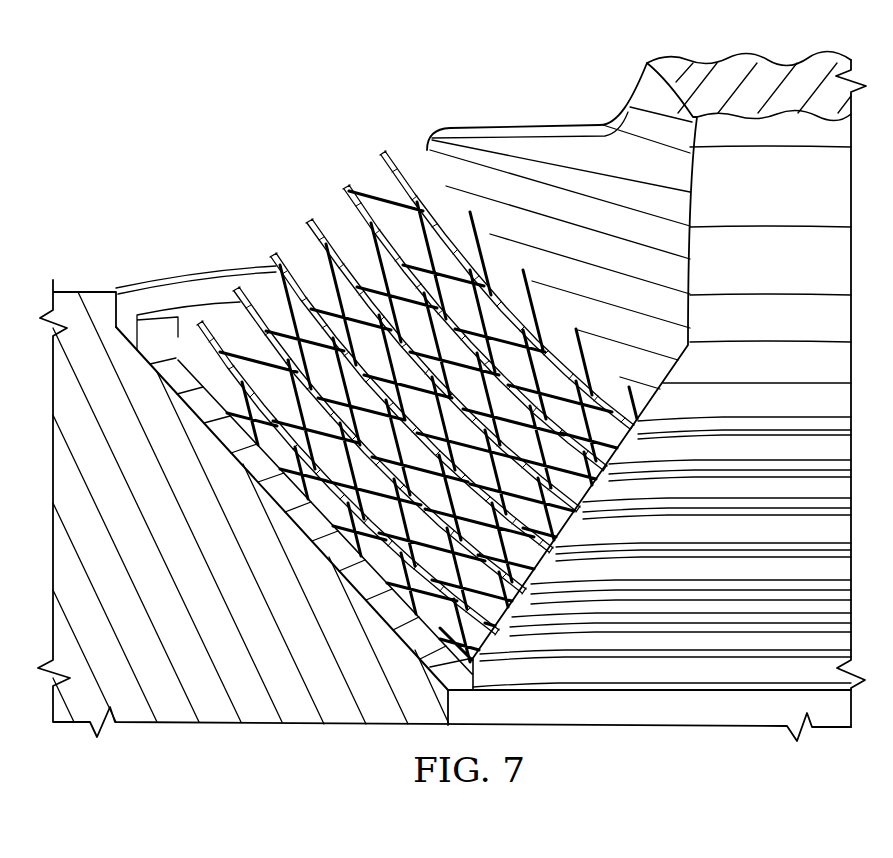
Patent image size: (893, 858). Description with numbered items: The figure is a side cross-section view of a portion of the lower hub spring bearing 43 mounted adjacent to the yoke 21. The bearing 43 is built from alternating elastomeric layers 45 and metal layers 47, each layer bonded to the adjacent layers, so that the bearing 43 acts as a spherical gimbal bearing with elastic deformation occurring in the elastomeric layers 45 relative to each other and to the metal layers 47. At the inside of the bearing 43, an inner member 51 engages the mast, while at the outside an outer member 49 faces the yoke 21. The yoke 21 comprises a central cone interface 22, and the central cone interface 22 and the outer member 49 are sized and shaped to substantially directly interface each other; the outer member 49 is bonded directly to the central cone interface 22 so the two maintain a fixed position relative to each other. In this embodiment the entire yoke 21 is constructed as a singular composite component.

The yoke 21 is at (94, 290).
The central cone interface 22 is at (242, 450).
The lower hub spring bearing 43 is at (417, 343).
The elastomeric layers 45 is at (268, 296).
The metal layers 47 is at (270, 256).
The outer member 49 is at (298, 515).
The inner member 51 is at (490, 147).